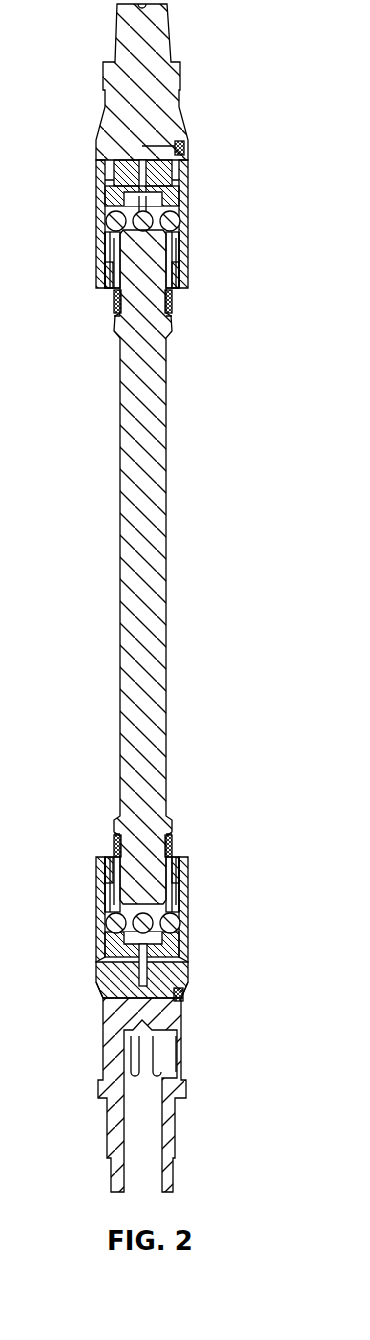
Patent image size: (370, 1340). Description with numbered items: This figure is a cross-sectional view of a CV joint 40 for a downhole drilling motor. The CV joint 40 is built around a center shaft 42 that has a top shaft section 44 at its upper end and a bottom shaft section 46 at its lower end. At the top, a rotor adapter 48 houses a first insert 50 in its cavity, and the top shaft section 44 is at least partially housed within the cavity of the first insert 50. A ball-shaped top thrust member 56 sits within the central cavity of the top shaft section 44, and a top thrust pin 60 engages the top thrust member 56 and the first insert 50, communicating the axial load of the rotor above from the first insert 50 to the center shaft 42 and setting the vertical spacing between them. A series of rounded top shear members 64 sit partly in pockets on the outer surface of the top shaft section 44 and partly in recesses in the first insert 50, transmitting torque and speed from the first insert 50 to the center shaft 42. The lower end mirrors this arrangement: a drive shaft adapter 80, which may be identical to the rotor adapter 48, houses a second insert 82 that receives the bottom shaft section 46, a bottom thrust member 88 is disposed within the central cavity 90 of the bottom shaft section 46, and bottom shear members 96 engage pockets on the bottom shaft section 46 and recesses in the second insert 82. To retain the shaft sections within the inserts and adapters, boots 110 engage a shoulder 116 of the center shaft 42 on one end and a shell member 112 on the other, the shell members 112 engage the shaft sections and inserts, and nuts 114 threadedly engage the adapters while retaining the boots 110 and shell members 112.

The CV joint 40 is at (174, 454).
The center shaft 42 is at (157, 497).
The top shaft section 44 is at (187, 244).
The bottom shaft section 46 is at (187, 895).
The rotor adapter 48 is at (163, 48).
The first insert 50 is at (181, 200).
The top thrust member 56 is at (105, 205).
The top thrust pin 60 is at (106, 184).
The top shear members 64 is at (181, 226).
The drive shaft adapter 80 is at (110, 1110).
The second insert 82 is at (100, 984).
The bottom thrust member 88 is at (100, 968).
The central cavity 90 is at (184, 990).
The bottom shear members 96 is at (180, 925).
The boots 110 is at (171, 313).
The shell members 112 is at (106, 250).
The nuts 114 is at (187, 272).
The shoulder 116 is at (112, 316).